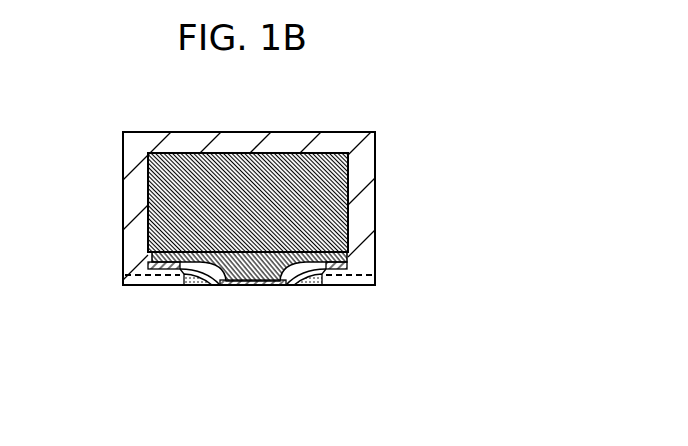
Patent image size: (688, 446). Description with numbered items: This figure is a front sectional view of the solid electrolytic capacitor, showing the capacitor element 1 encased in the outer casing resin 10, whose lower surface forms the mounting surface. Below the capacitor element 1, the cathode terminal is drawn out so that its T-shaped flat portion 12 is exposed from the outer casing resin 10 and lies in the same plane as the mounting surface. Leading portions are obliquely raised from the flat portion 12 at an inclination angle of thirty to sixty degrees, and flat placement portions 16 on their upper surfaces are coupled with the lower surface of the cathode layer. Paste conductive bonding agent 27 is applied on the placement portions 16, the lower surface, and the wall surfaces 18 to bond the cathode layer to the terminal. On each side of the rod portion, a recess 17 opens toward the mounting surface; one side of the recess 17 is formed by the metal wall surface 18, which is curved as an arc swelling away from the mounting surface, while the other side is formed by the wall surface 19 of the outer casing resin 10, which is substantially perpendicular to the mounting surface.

The capacitor element 1 is at (323, 193).
The outer casing resin 10 is at (187, 140).
The flat portion 12 is at (254, 284).
The placement portion 16 is at (342, 267).
The recess 17 is at (298, 283).
The wall surface 18 is at (305, 283).
The wall surface 19 is at (311, 280).
The conductive bonding agent 27 is at (263, 260).